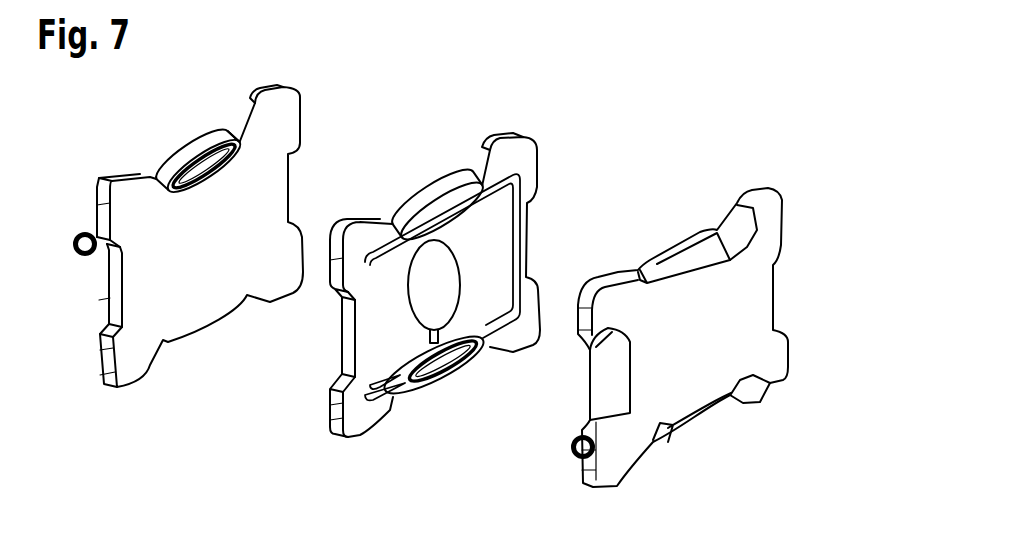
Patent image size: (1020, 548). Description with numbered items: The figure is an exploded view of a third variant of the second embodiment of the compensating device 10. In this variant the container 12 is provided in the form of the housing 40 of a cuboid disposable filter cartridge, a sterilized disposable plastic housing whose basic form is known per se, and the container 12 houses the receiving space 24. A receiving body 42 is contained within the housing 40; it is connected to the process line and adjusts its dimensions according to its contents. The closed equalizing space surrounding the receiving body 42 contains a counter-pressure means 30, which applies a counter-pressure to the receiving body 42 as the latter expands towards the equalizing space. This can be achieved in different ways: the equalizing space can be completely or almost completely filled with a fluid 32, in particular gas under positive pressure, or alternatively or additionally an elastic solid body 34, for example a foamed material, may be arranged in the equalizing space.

The compensating device 10 is at (724, 106).
The container 12 is at (480, 286).
The housing 40 is at (190, 317).
The counter-pressure means 30 is at (425, 255).
The fluid 32 is at (425, 255).
The elastic solid body 34 is at (387, 280).
The receiving space 24 is at (505, 264).
The receiving body 42 is at (445, 265).